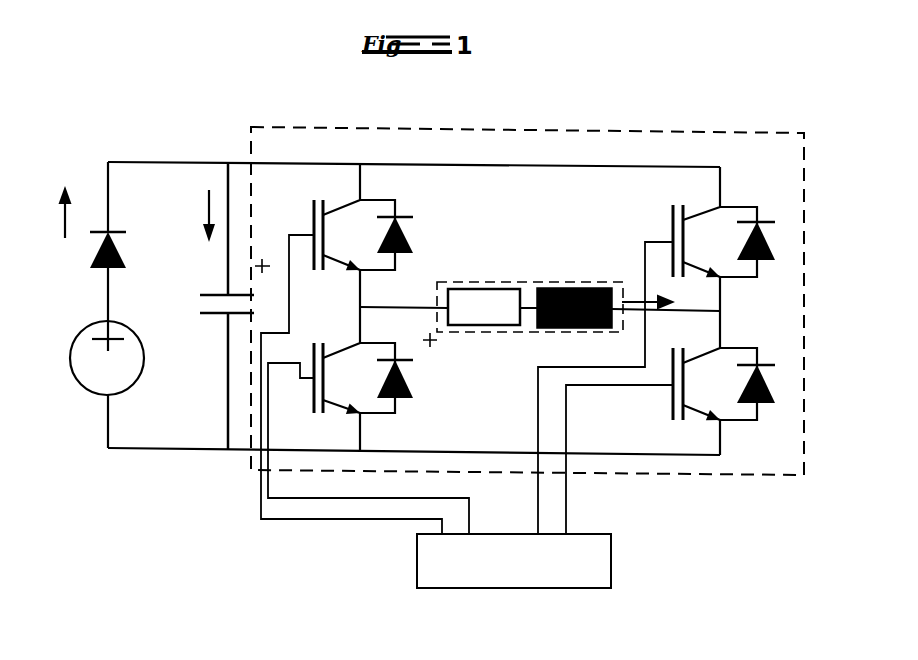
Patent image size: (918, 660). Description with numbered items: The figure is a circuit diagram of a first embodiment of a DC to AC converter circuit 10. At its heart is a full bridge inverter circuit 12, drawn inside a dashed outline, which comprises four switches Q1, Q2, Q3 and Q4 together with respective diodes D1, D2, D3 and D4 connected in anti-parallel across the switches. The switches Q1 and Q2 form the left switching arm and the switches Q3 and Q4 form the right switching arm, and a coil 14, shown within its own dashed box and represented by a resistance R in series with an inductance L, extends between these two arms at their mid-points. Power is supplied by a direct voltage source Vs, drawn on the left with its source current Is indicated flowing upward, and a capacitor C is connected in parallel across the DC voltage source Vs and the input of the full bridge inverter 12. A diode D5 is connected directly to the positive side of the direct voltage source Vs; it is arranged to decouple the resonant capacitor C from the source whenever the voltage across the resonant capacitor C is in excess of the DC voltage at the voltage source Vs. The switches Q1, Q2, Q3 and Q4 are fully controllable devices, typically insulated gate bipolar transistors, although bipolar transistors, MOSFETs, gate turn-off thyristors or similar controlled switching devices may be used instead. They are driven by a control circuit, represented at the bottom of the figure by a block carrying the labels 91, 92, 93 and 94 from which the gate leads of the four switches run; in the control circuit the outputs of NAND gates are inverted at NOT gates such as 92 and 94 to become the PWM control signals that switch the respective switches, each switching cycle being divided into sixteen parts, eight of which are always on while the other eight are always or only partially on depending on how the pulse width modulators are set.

The DC to AC converter circuit 10 is at (562, 108).
The full bridge inverter circuit 12 is at (660, 132).
The coil 14 is at (540, 295).
The gate drive signal for Q1 91 is at (514, 561).
The NOT gate 92 is at (487, 561).
The gate drive signal for Q3 93 is at (541, 561).
The NOT gate 94 is at (582, 561).
The switch Q1 is at (351, 348).
The switch Q2 is at (368, 420).
The switch Q3 is at (643, 422).
The switch Q4 is at (629, 350).
The diode D1 is at (408, 221).
The diode D2 is at (406, 392).
The diode D3 is at (749, 406).
The diode D4 is at (750, 219).
The diode D5 is at (124, 268).
The capacitor C is at (223, 305).
The resistance R is at (484, 286).
The inductance L is at (540, 252).
The DC voltage source Vs is at (88, 358).
The source current Is is at (49, 212).